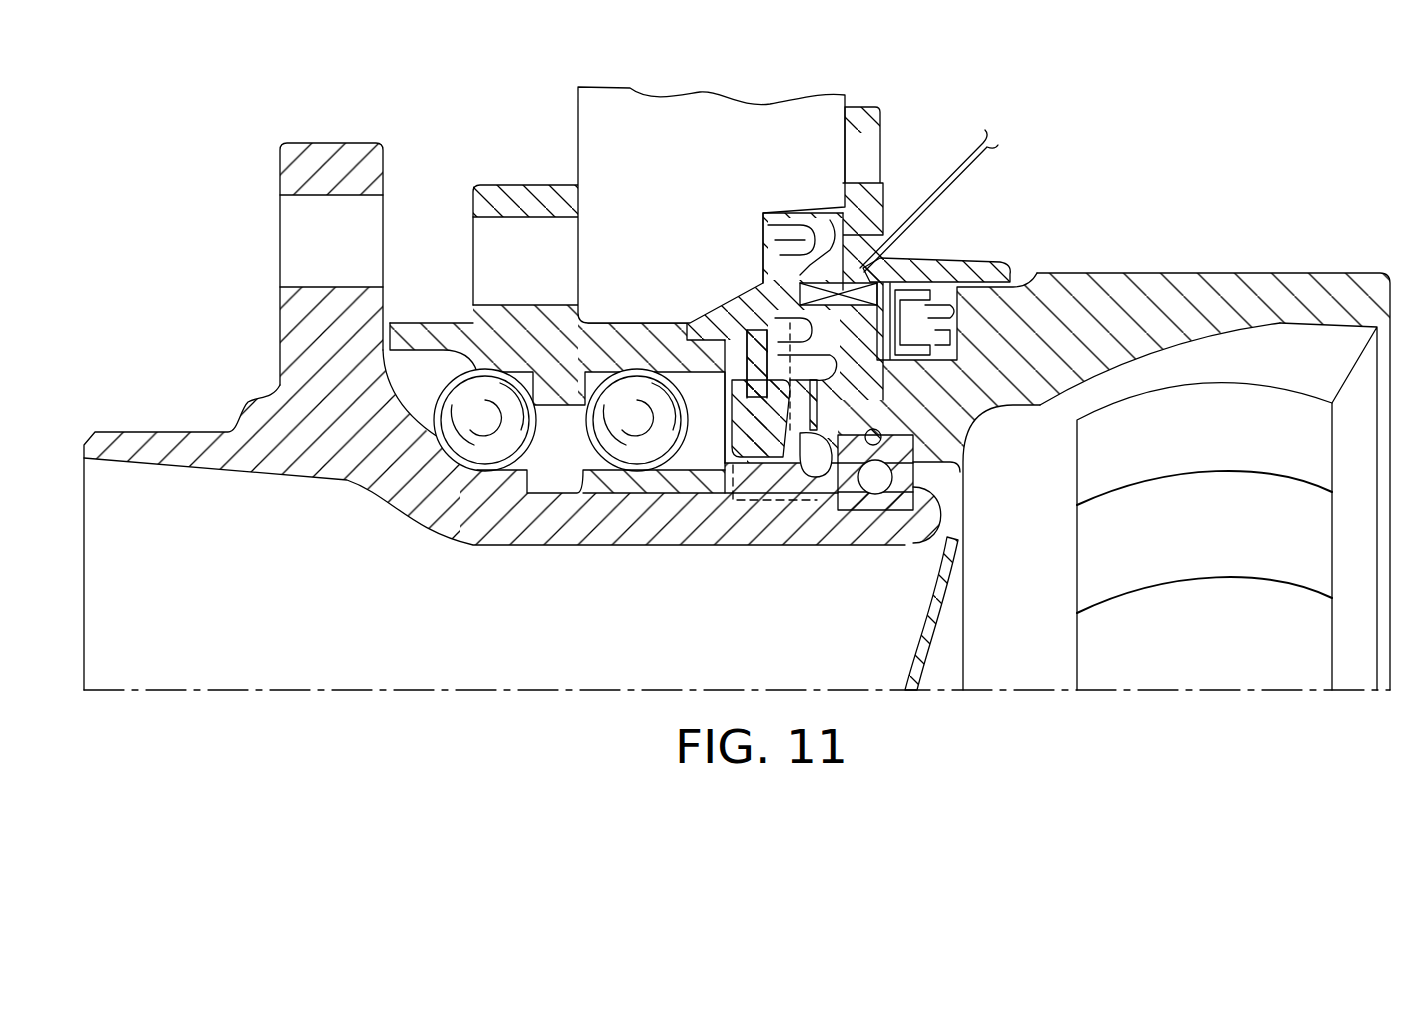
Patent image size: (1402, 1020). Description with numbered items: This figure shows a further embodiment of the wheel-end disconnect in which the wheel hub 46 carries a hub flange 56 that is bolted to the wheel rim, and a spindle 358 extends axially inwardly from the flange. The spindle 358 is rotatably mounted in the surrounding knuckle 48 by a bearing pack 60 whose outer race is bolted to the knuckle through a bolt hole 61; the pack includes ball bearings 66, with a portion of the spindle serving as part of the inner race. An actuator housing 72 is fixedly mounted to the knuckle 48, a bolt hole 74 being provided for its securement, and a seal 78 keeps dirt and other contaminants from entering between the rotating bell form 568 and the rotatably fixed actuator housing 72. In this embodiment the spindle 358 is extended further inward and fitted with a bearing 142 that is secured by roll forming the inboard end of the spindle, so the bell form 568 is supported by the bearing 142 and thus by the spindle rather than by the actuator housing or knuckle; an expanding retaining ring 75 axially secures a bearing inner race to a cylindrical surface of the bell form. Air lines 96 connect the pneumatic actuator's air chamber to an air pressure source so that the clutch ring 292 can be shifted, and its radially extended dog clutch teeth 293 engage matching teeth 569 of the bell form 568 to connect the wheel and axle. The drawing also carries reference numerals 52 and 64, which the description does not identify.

The wheel hub 46 is at (313, 457).
The knuckle 48 is at (578, 130).
The spindle / axle shaft 52 is at (1258, 283).
The hub flange 56 is at (288, 323).
The bearing pack 60 is at (462, 160).
The bolt hole 61 is at (480, 240).
The outer ring 64 is at (482, 328).
The ball bearings 66 is at (613, 425).
The actuator housing 72 is at (980, 263).
The bolt hole 74 is at (870, 150).
The expanding retaining ring 75 is at (952, 420).
The seal 78 is at (960, 300).
The air lines 96 is at (990, 152).
The bearing 142 is at (872, 508).
The clutch ring 292 is at (752, 450).
The dog clutch teeth 293 is at (790, 430).
The spindle 358 is at (648, 522).
The bell form 568 is at (1010, 365).
The teeth 569 is at (808, 430).